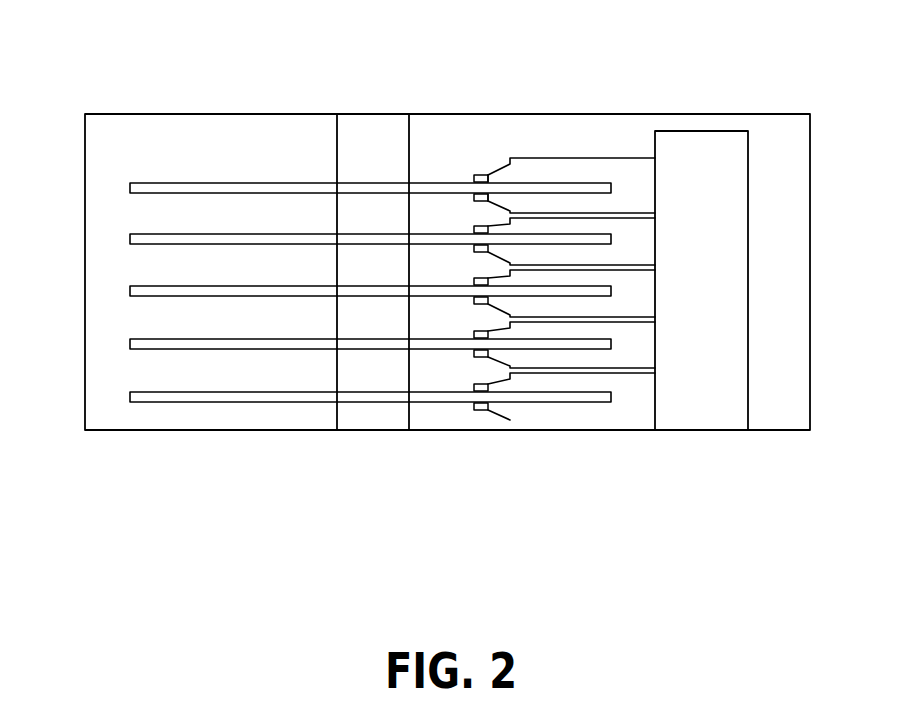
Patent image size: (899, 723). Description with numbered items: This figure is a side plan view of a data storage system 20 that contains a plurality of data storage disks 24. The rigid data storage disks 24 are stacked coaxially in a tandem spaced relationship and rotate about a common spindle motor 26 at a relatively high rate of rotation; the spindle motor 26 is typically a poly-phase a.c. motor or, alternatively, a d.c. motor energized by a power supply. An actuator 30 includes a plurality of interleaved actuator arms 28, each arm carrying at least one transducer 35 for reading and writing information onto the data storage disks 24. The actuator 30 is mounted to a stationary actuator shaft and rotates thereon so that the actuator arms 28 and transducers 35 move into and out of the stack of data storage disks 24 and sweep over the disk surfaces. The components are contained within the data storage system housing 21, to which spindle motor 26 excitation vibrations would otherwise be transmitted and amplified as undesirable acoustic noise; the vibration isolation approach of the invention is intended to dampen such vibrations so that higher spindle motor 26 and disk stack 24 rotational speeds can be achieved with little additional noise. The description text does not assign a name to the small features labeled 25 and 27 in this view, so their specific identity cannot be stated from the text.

The data storage system 20 is at (711, 81).
The data storage system housing 21 is at (812, 310).
The data storage disks 24 is at (128, 185).
The gap 25 is at (489, 173).
The spindle motor 26 is at (365, 421).
The upper contact pad 27 is at (475, 176).
The actuator arms 28 is at (565, 157).
The actuator 30 is at (702, 407).
The transducer 35 is at (474, 198).